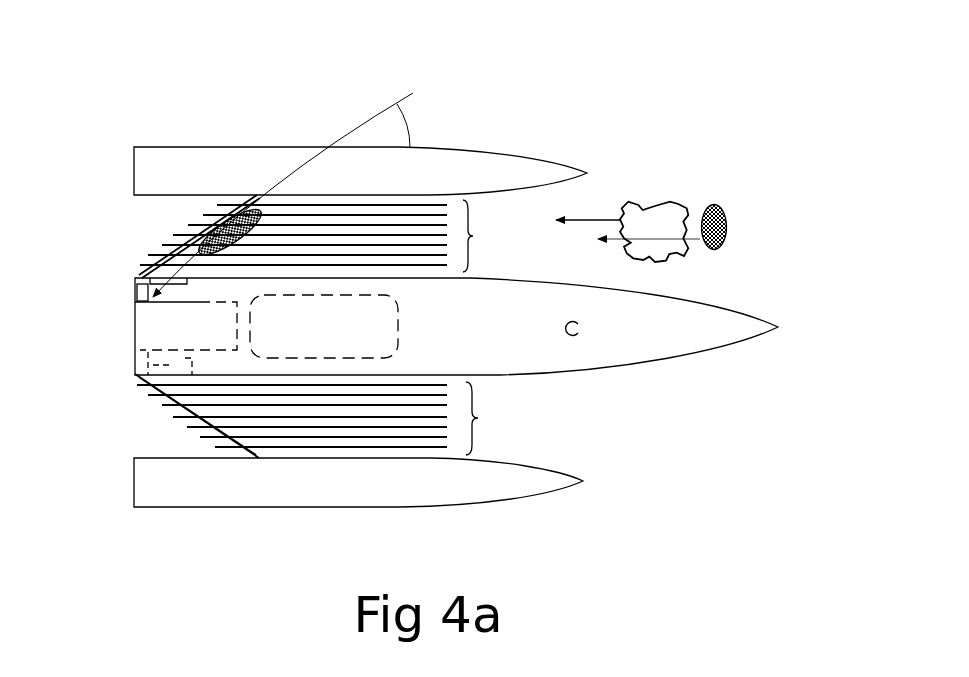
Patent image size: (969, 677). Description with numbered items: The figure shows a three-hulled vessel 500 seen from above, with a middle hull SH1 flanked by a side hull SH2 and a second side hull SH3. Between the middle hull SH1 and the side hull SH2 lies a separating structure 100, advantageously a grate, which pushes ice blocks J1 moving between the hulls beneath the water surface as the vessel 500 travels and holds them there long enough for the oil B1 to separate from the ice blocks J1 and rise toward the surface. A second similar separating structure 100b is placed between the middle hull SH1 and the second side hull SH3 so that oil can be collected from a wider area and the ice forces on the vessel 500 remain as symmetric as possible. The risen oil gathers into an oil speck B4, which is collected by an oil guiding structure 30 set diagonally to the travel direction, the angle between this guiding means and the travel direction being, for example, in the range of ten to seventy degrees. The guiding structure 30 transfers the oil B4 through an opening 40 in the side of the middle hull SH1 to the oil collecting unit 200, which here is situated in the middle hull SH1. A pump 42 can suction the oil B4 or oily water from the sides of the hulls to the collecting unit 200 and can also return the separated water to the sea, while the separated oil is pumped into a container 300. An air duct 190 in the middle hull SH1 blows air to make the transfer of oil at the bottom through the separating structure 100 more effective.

The side hull SH2 is at (492, 147).
The second side hull SH3 is at (540, 498).
The middle hull SH1 is at (742, 312).
The separating structure 100 is at (334, 187).
The second separating structure 100b is at (341, 416).
The oil guiding structure 30 is at (188, 240).
The oil speck B4 is at (260, 195).
The opening 40 is at (138, 280).
The pump 42 is at (136, 292).
The oil collecting unit 200 is at (135, 330).
The container 300 is at (398, 328).
The air duct 190 is at (573, 337).
The ice blocks J1 is at (668, 200).
The oil B1 is at (716, 205).
The vessel 500 is at (633, 92).